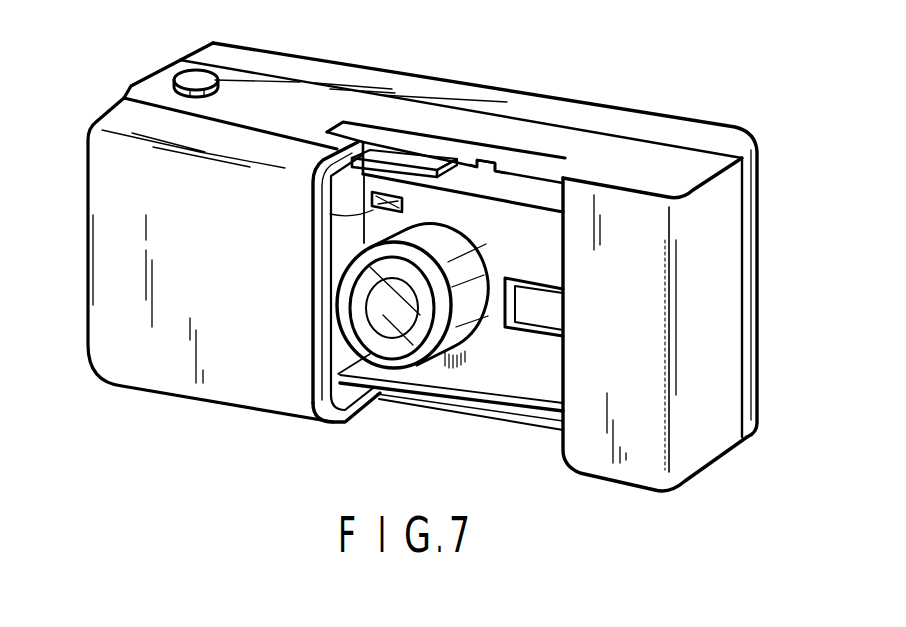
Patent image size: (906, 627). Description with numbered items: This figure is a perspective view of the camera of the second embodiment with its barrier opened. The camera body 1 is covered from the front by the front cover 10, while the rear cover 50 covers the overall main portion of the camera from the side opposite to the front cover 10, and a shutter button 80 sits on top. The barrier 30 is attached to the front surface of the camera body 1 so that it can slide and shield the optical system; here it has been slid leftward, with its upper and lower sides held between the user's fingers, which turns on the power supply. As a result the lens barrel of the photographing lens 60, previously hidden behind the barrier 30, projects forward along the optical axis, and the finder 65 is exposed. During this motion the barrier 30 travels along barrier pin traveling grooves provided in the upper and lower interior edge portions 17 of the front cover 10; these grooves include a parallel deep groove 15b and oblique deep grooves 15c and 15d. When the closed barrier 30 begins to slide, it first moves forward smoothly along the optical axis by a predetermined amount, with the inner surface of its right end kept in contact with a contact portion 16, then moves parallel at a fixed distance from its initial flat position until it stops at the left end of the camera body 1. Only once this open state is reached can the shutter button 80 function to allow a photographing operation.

The camera body 1 is at (780, 348).
The front cover 10 is at (722, 270).
The parallel groove (deep groove) 15b is at (392, 162).
The oblique groove (deep groove) 15c is at (447, 160).
The oblique groove (deep groove) 15d is at (483, 167).
The contact portion 16 is at (548, 318).
The interior edge portion 17 is at (542, 188).
The barrier 30 is at (123, 358).
The rear cover 50 is at (715, 130).
The photographing lens 60 is at (466, 268).
The finder 65 is at (364, 206).
The shutter button 80 is at (189, 80).